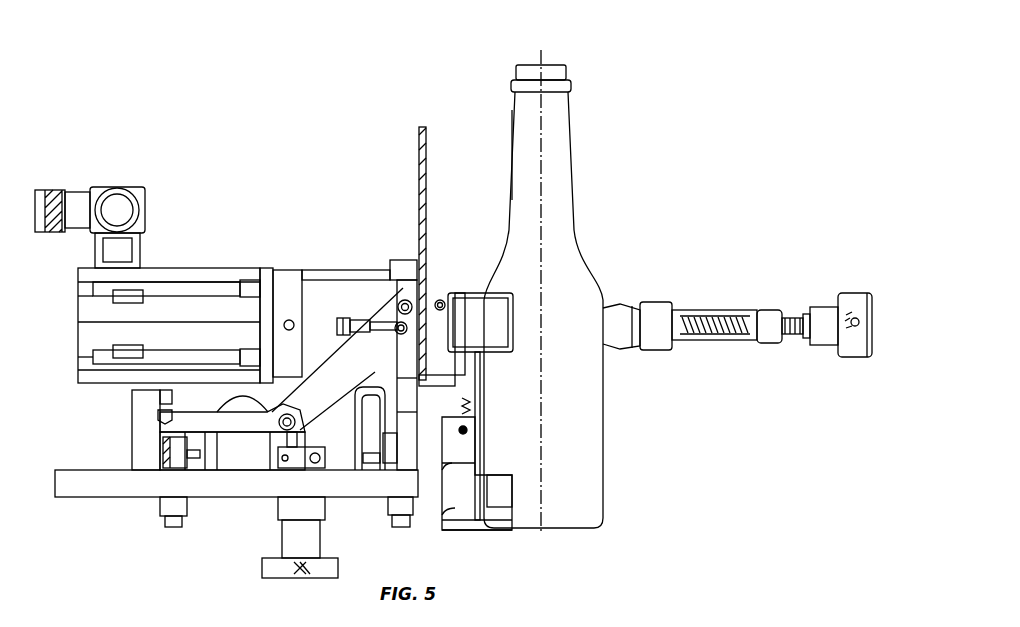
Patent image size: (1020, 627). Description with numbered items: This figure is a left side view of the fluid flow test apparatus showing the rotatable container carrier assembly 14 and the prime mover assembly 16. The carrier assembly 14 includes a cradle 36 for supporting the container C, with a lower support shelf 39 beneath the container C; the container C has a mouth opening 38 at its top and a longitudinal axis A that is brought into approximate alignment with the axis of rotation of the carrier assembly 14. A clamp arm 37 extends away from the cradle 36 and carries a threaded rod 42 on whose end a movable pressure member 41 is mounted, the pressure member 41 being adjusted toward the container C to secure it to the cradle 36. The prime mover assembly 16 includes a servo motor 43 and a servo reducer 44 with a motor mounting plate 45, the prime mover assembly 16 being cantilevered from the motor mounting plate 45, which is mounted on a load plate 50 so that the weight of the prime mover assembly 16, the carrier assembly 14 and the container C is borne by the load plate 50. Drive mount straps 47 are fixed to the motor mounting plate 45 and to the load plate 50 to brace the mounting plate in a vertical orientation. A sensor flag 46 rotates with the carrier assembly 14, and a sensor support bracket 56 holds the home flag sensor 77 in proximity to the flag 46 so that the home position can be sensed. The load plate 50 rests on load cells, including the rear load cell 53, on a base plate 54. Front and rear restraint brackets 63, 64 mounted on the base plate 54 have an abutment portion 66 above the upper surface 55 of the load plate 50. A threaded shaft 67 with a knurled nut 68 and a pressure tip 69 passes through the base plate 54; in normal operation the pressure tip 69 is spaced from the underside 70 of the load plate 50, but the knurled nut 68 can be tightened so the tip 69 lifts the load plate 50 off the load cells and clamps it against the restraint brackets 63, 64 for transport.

The rotatable container carrier assembly 14 is at (690, 278).
The prime mover assembly 16 is at (230, 188).
The cradle 36 is at (494, 335).
The clamp arm 37 is at (735, 312).
The mouth opening 38 is at (549, 66).
The lower support shelf 39 is at (470, 530).
The movable pressure member 41 is at (657, 340).
The threaded rod 42 is at (803, 336).
The servo motor 43 is at (232, 290).
The servo reducer 44 is at (347, 278).
The motor mounting plate 45 is at (398, 272).
The sensor flag 46 is at (426, 150).
The drive mount straps 47 is at (340, 363).
The load plate 50 is at (237, 432).
The load cell 53 is at (178, 455).
The base plate 54 is at (112, 482).
The upper surface 55 is at (227, 412).
The sensor support bracket 56 is at (390, 375).
The front restraint bracket 63 is at (400, 424).
The rear restraint bracket 64 is at (138, 416).
The abutment portion 66 is at (172, 418).
The threaded shaft 67 is at (305, 445).
The knurled nut 68 is at (265, 568).
The pressure tip 69 is at (292, 416).
The underside 70 is at (257, 433).
The home flag sensor 77 is at (380, 328).
The longitudinal axis A is at (545, 160).
The container C is at (572, 452).